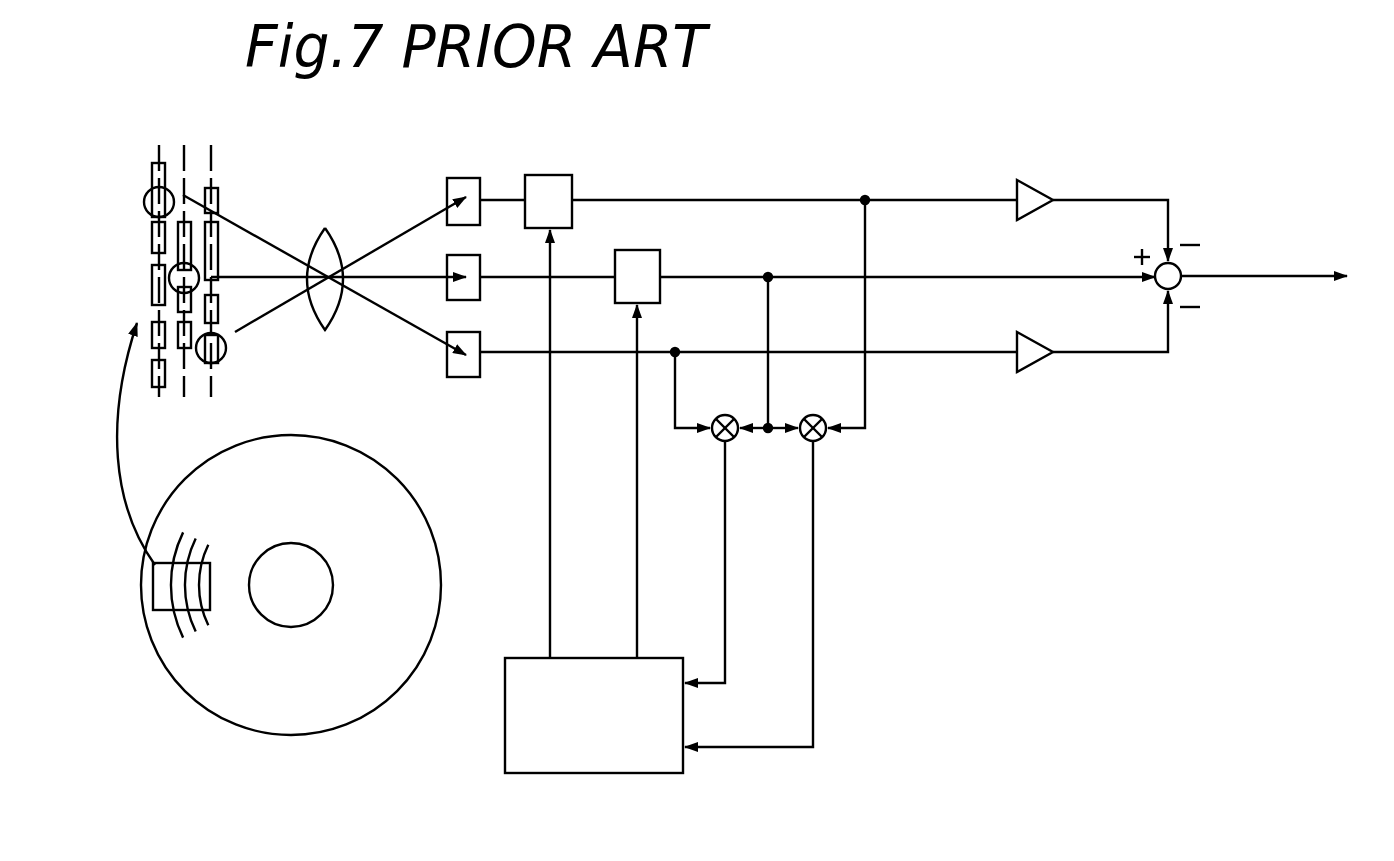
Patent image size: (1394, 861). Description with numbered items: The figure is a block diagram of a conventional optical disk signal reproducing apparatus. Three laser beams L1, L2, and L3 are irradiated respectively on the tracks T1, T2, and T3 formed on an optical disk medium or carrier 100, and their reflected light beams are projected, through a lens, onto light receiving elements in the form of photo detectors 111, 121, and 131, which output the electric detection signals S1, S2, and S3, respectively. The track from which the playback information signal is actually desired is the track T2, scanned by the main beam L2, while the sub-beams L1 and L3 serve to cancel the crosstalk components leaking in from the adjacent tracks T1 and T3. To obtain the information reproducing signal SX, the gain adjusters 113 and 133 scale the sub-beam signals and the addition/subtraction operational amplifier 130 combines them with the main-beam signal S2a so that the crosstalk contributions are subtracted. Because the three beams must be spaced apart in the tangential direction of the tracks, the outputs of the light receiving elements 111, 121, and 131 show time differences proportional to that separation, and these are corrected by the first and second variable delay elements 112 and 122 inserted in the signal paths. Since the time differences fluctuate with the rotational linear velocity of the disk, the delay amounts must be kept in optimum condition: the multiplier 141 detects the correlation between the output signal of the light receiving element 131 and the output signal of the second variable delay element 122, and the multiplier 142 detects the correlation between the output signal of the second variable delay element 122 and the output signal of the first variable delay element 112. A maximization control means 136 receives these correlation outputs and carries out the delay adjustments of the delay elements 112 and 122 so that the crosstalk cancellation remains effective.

The optical disk medium 100 is at (295, 737).
The light receiving element 111 is at (460, 178).
The first variable delay element 112 is at (548, 175).
The gain adjuster 113 is at (1040, 190).
The light receiving element 121 is at (480, 290).
The second variable delay element 122 is at (660, 258).
The addition/subtraction operational amplifier 130 is at (1180, 266).
The light receiving element 131 is at (465, 377).
The gain adjuster 133 is at (1040, 340).
The maximization control means 136 is at (660, 658).
The multiplier 141 is at (713, 443).
The multiplier 142 is at (800, 443).
The laser beam L1 is at (226, 347).
The laser beam L2 is at (168, 265).
The laser beam L3 is at (144, 200).
The track T1 is at (214, 287).
The track T2 is at (184, 300).
The track T3 is at (152, 287).
The electric detection signal S1 is at (495, 200).
The electric detection signal S2 is at (592, 277).
The delayed main-beam signal S2a is at (1083, 274).
The electric detection signal S3 is at (590, 354).
The information reproducing signal SX is at (1284, 278).